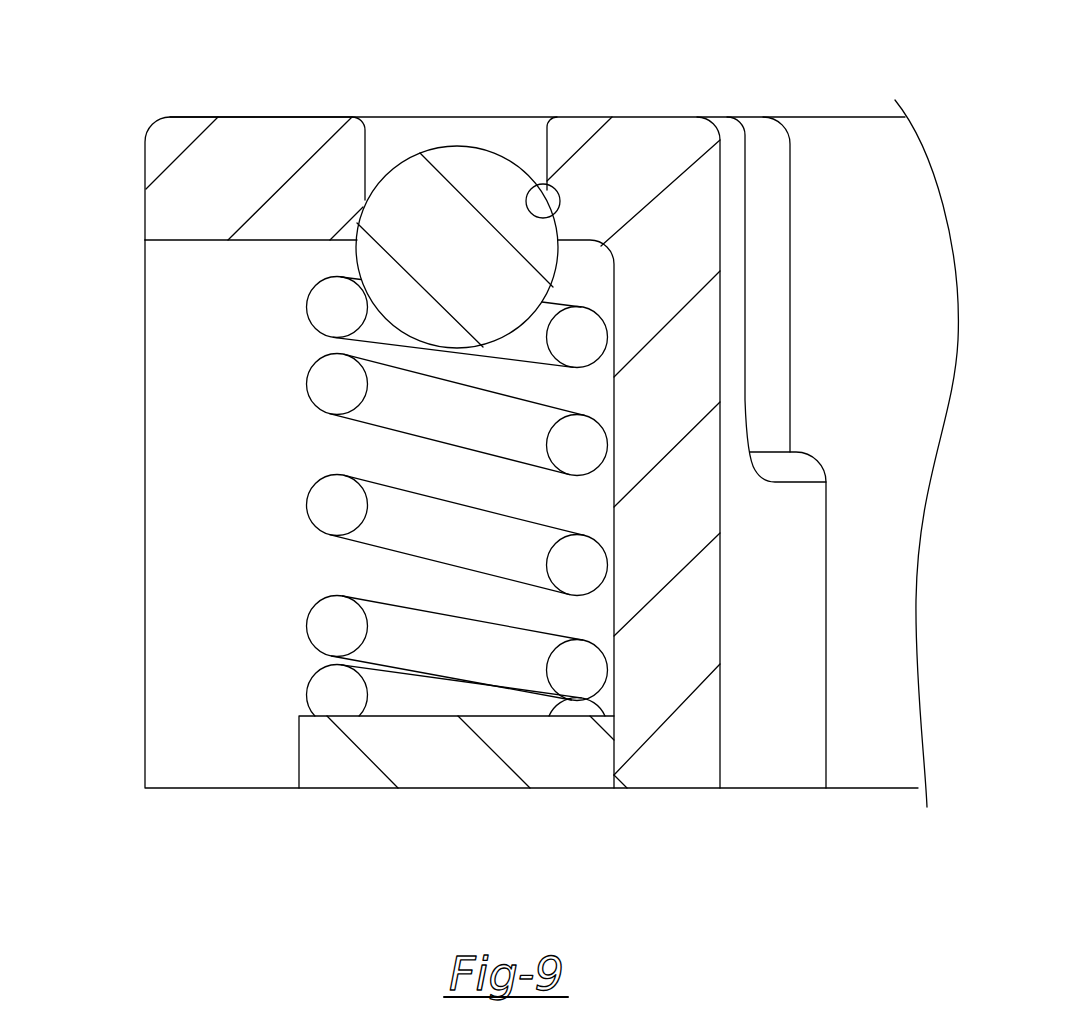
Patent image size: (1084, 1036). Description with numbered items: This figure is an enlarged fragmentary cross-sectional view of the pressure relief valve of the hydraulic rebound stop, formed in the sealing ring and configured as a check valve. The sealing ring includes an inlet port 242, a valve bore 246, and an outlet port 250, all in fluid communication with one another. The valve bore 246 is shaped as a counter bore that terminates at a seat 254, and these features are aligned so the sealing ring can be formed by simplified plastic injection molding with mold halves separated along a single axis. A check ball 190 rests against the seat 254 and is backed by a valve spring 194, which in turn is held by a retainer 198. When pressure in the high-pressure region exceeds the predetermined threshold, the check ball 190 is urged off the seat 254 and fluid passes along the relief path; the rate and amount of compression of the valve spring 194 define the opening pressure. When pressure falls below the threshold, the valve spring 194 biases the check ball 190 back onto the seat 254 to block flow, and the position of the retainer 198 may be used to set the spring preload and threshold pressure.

The check ball 190 is at (480, 190).
The valve spring 194 is at (313, 602).
The retainer 198 is at (342, 762).
The inlet port 242 is at (402, 142).
The valve bore 246 is at (365, 455).
The outlet port 250 is at (165, 532).
The seat 254 is at (553, 221).